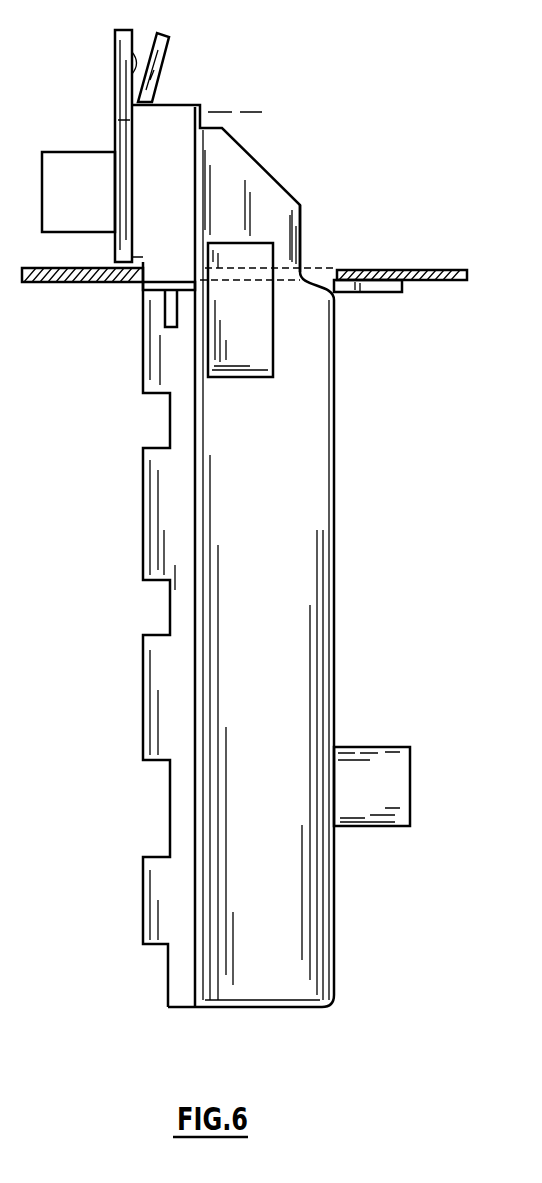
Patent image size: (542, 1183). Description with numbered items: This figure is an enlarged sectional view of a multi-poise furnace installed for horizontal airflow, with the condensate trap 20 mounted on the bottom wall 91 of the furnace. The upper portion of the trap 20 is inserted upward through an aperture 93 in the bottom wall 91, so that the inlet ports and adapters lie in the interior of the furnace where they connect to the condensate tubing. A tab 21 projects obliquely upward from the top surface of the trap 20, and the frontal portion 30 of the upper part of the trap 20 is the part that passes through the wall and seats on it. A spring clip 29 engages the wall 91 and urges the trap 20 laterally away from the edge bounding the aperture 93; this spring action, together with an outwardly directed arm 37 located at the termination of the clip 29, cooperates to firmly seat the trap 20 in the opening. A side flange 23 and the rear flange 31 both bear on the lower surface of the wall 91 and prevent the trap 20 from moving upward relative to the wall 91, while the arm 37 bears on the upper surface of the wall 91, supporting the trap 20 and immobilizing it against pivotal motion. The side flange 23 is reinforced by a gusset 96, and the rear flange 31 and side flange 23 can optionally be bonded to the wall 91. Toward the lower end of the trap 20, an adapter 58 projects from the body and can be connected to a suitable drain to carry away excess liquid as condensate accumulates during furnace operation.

The condensate trap 20 is at (273, 137).
The tab 21 is at (166, 36).
The side flange 23 is at (153, 292).
The spring clip 29 is at (253, 320).
The frontal portion 30 is at (115, 132).
The rear flange 31 is at (373, 293).
The outwardly directed arm 37 is at (263, 246).
The adapter 58 is at (375, 752).
The bottom wall 91 is at (52, 267).
The aperture 93 is at (332, 277).
The gusset 96 is at (165, 317).